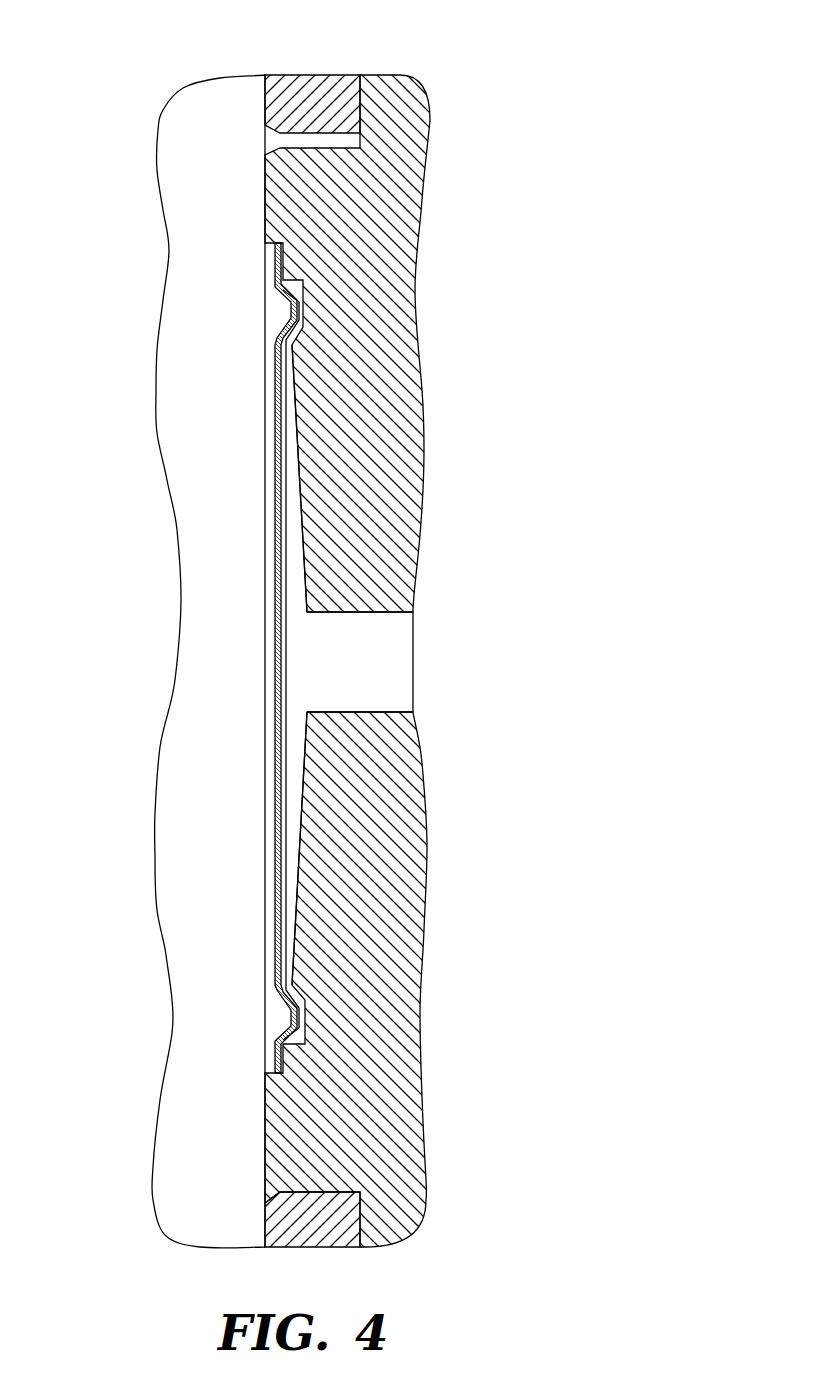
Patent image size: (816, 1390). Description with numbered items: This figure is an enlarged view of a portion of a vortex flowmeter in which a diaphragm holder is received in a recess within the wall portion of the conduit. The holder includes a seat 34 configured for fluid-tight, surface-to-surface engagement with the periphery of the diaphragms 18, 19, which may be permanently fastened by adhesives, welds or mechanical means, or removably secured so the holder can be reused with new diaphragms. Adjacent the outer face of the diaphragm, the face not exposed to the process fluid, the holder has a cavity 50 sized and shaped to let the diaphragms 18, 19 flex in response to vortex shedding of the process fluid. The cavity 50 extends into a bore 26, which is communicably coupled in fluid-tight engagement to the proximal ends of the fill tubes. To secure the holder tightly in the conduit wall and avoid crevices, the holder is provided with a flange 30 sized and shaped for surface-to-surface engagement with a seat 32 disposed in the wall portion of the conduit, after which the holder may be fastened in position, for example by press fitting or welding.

The diaphragm 18 is at (275, 567).
The diaphragm 19 is at (275, 567).
The bore 26 is at (402, 642).
The flange 30 is at (360, 118).
The seat 32 is at (362, 95).
The seat 34 is at (272, 1066).
The cavity 50 is at (300, 664).